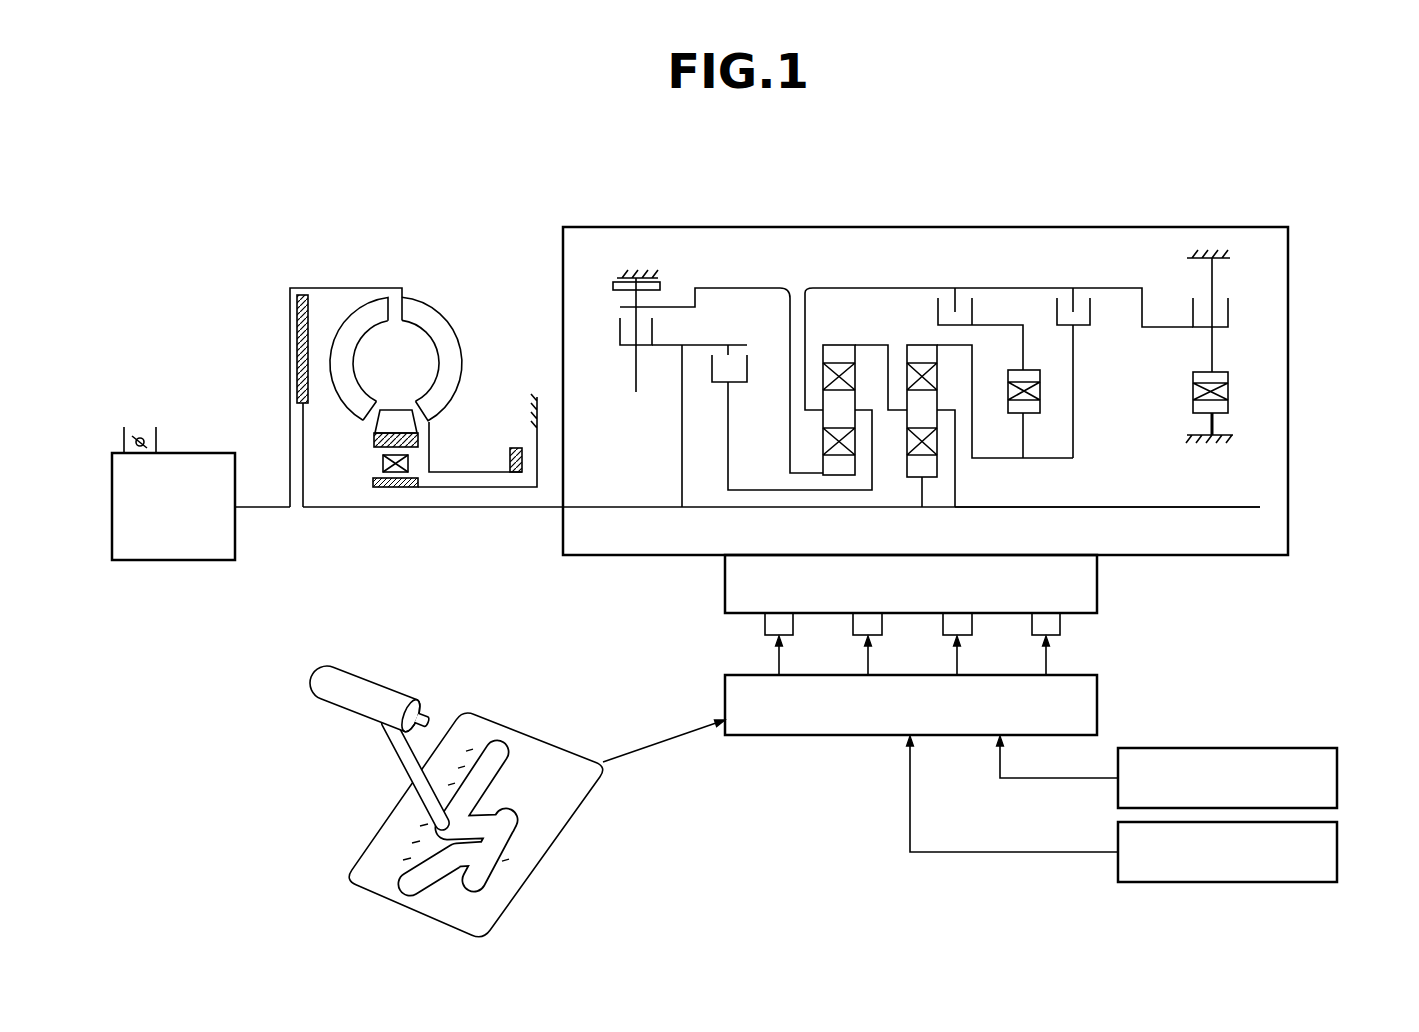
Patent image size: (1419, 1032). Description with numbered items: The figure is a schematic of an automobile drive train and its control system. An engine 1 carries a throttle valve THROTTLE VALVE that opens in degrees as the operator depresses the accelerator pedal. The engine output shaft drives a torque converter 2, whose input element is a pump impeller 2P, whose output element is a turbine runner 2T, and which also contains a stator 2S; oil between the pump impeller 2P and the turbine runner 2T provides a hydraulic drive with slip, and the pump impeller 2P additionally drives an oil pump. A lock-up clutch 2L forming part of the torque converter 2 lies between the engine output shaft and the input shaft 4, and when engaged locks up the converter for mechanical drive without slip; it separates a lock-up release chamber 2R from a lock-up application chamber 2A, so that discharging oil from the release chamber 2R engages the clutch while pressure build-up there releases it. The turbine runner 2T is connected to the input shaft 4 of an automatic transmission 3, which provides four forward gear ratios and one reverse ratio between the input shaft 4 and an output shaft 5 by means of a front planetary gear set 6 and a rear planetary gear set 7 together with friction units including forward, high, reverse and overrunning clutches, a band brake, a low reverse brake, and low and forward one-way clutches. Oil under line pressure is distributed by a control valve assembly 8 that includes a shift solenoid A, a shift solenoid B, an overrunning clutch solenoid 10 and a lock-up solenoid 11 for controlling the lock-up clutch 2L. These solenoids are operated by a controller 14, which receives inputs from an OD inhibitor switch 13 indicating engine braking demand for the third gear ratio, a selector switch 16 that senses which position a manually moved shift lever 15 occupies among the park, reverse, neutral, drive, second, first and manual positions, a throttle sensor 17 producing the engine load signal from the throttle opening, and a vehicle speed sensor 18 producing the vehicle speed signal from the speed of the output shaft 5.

The engine 1 is at (205, 453).
The torque converter 2 is at (366, 280).
The turbine runner 2T is at (349, 315).
The pump impeller 2P is at (458, 341).
The lock-up application chamber 2A is at (418, 342).
The stator 2S is at (400, 418).
The lock-up clutch 2L is at (296, 327).
The lock-up release chamber 2R is at (290, 428).
The automatic transmission 3 is at (563, 258).
The input shaft 4 is at (510, 510).
The output shaft 5 is at (1215, 507).
The front planetary gear set 6 is at (833, 343).
The rear planetary gear set 7 is at (918, 343).
The control valve assembly 8 is at (725, 586).
The overrunning clutch solenoid 10 is at (853, 628).
The lock-up solenoid 11 is at (765, 628).
The shift solenoid A is at (943, 628).
The shift solenoid B is at (1032, 628).
The OD inhibitor switch 13 is at (422, 720).
The controller 14 is at (725, 691).
The shift lever 15 is at (361, 726).
The selector switch 16 is at (508, 724).
The throttle sensor 17 is at (1340, 779).
The vehicle speed sensor 18 is at (1340, 853).
The throttle valve THROTTLE VALVE is at (139, 427).